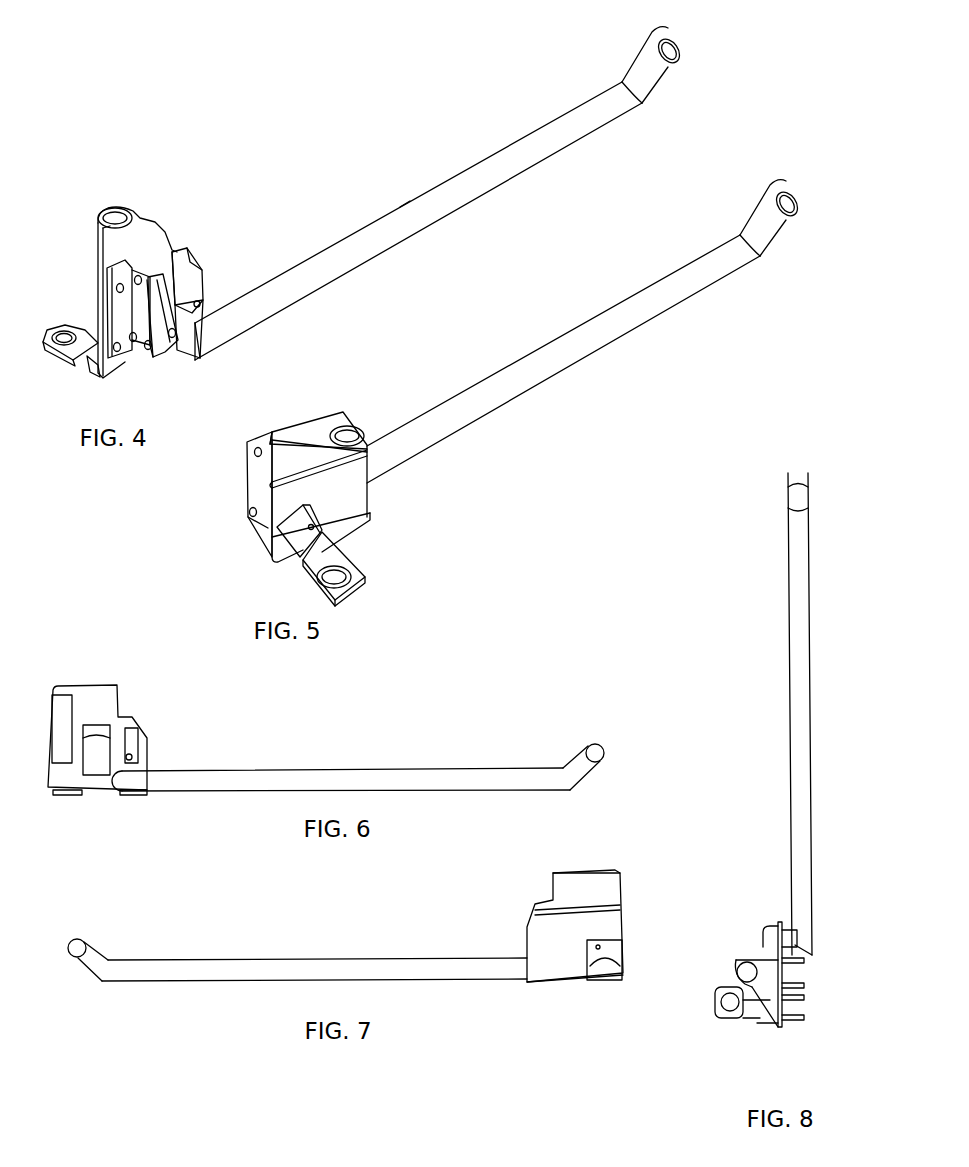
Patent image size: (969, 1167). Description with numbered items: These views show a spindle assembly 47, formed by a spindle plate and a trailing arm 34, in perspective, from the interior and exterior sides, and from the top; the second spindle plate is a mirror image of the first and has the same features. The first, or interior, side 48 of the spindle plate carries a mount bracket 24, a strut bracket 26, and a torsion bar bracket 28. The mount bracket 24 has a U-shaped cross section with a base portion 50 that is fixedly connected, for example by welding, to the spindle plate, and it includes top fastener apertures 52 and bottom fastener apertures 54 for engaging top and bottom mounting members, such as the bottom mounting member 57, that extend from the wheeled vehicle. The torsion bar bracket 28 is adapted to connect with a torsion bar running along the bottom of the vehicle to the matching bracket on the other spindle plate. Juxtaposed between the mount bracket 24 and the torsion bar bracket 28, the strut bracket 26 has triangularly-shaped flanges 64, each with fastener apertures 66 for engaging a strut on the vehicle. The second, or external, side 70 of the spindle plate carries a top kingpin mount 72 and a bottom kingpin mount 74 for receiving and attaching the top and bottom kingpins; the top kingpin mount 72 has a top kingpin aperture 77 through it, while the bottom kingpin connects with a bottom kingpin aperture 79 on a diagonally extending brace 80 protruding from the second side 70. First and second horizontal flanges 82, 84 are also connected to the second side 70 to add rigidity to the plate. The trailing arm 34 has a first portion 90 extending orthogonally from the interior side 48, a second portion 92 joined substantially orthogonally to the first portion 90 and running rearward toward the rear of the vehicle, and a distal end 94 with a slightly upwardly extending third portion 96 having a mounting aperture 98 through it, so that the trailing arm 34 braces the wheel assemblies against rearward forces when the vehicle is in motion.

In FIG. 4, the mount bracket 24 is at (108, 304).
In FIG. 5, the mount bracket 24 is at (255, 482).
In FIG. 6, the mount bracket 24 is at (56, 718).
In FIG. 8, the mount bracket 24 is at (786, 1028).
In FIG. 4, the strut bracket 26 is at (160, 285).
In FIG. 8, the strut bracket 26 is at (806, 1020).
In FIG. 4, the torsion bar bracket 28 is at (205, 280).
In FIG. 6, the torsion bar bracket 28 is at (135, 733).
In FIG. 8, the torsion bar bracket 28 is at (792, 935).
In FIG. 4, the trailing arm 34 is at (418, 222).
In FIG. 5, the trailing arm 34 is at (555, 375).
In FIG. 6, the trailing arm 34 is at (275, 770).
In FIG. 7, the trailing arm 34 is at (259, 960).
In FIG. 8, the trailing arm 34 is at (790, 810).
In FIG. 4, the spindle assembly 47 is at (190, 192).
In FIG. 5, the spindle assembly 47 is at (358, 385).
In FIG. 6, the spindle assembly 47 is at (150, 683).
In FIG. 7, the spindle assembly 47 is at (452, 905).
In FIG. 8, the spindle assembly 47 is at (718, 825).
In FIG. 4, the first side 48 is at (133, 253).
In FIG. 4, the base portion 50 is at (108, 262).
In FIG. 4, the top fastener apertures 52 is at (134, 280).
In FIG. 5, the top fastener apertures 52 is at (272, 442).
In FIG. 4, the bottom fastener apertures 54 is at (88, 362).
In FIG. 5, the bottom mounting member 57 is at (250, 514).
In FIG. 4, the triangularly-shaped flange 64 is at (160, 352).
In FIG. 6, the triangularly-shaped flange 64 is at (85, 743).
In FIG. 8, the triangularly-shaped flange 64 is at (806, 986).
In FIG. 4, the fastener apertures 66 is at (133, 358).
In FIG. 5, the second side 70 is at (323, 515).
In FIG. 4, the top kingpin mount 72 is at (100, 225).
In FIG. 5, the top kingpin mount 72 is at (322, 435).
In FIG. 7, the top kingpin mount 72 is at (595, 872).
In FIG. 8, the top kingpin mount 72 is at (764, 1000).
In FIG. 4, the bottom kingpin mount 74 is at (64, 338).
In FIG. 5, the bottom kingpin mount 74 is at (368, 578).
In FIG. 6, the bottom kingpin mount 74 is at (68, 797).
In FIG. 8, the bottom kingpin mount 74 is at (728, 1018).
In FIG. 4, the top kingpin aperture 77 is at (122, 208).
In FIG. 5, the top kingpin aperture 77 is at (352, 432).
In FIG. 8, the top kingpin aperture 77 is at (740, 970).
In FIG. 4, the bottom kingpin aperture 79 is at (62, 330).
In FIG. 5, the bottom kingpin aperture 79 is at (345, 574).
In FIG. 8, the bottom kingpin aperture 79 is at (722, 1010).
In FIG. 5, the diagonally extending brace 80 is at (290, 545).
In FIG. 7, the diagonally extending brace 80 is at (617, 952).
In FIG. 5, the first horizontal flange 82 is at (330, 470).
In FIG. 7, the first horizontal flange 82 is at (605, 903).
In FIG. 5, the second horizontal flange 84 is at (370, 520).
In FIG. 7, the second horizontal flange 84 is at (545, 975).
In FIG. 4, the first portion 90 is at (192, 360).
In FIG. 8, the first portion 90 is at (806, 960).
In FIG. 4, the second portion 92 is at (268, 304).
In FIG. 5, the second portion 92 is at (408, 455).
In FIG. 6, the second portion 92 is at (150, 790).
In FIG. 7, the second portion 92 is at (164, 981).
In FIG. 8, the second portion 92 is at (792, 895).
In FIG. 4, the distal end 94 is at (656, 65).
In FIG. 5, the distal end 94 is at (775, 219).
In FIG. 6, the distal end 94 is at (605, 750).
In FIG. 7, the distal end 94 is at (79, 952).
In FIG. 8, the distal end 94 is at (796, 490).
In FIG. 4, the third portion 96 is at (647, 75).
In FIG. 5, the third portion 96 is at (765, 229).
In FIG. 6, the third portion 96 is at (586, 770).
In FIG. 7, the third portion 96 is at (82, 972).
In FIG. 4, the mounting aperture 98 is at (680, 52).
In FIG. 5, the mounting aperture 98 is at (798, 205).
In FIG. 6, the mounting aperture 98 is at (606, 757).
In FIG. 7, the mounting aperture 98 is at (70, 945).
In FIG. 8, the mounting aperture 98 is at (805, 498).